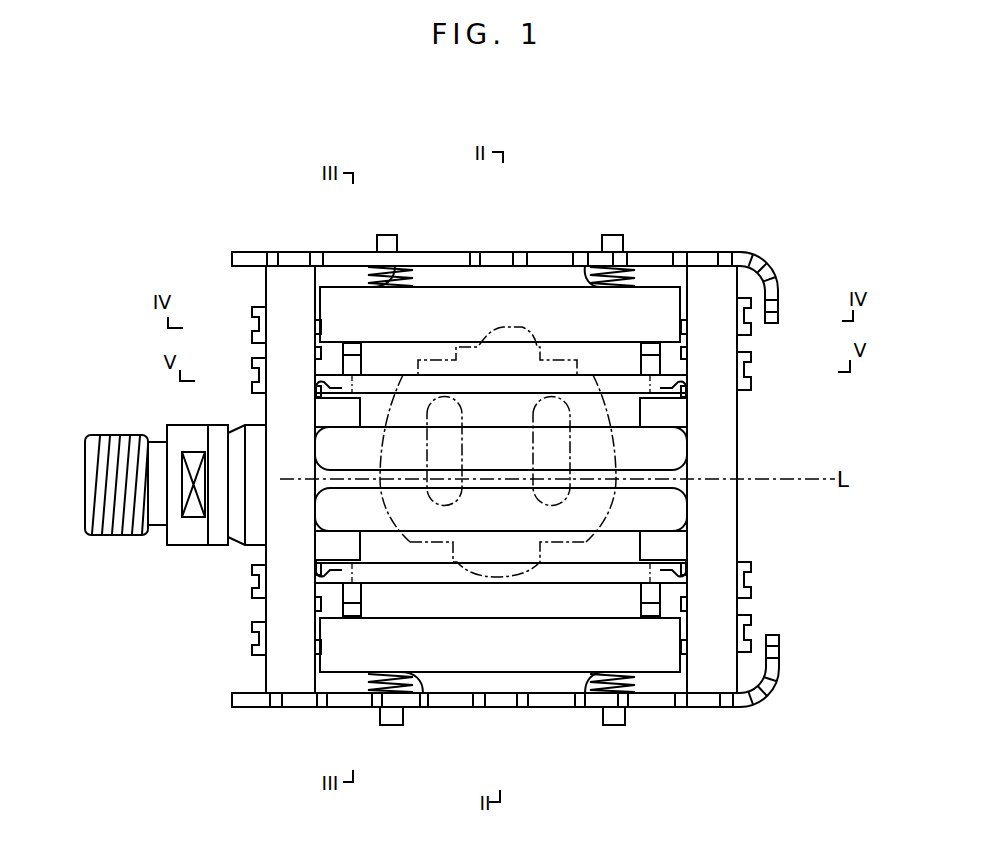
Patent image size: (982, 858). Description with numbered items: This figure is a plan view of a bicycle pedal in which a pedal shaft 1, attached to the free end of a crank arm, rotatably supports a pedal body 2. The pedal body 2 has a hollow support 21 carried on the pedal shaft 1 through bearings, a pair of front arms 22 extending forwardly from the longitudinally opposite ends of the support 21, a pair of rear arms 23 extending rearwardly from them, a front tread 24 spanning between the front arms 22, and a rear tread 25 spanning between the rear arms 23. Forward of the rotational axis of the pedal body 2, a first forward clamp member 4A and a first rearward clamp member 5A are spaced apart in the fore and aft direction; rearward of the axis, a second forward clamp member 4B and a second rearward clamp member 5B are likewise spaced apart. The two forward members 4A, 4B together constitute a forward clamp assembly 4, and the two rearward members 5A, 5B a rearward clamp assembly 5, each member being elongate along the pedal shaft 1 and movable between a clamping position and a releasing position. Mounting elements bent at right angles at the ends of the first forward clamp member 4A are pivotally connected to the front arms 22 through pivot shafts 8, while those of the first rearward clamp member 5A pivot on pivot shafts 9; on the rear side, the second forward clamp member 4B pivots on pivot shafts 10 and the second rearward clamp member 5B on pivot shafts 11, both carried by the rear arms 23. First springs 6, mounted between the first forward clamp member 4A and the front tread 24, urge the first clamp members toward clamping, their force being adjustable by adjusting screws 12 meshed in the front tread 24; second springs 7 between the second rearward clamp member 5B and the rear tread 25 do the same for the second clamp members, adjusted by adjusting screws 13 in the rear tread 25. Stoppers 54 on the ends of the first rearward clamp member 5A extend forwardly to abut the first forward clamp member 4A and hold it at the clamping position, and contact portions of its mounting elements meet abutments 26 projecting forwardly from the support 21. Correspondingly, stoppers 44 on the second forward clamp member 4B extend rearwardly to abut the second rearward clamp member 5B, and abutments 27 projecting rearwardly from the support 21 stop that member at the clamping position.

The pedal shaft 1 is at (177, 427).
The pedal body 2 is at (737, 468).
The forward clamp assembly 4 is at (500, 481).
The first forward clamp member 4A is at (455, 287).
The second forward clamp member 4B is at (465, 582).
The rearward clamp assembly 5 is at (501, 501).
The first rearward clamp member 5A is at (498, 375).
The second rearward clamp member 5B is at (507, 662).
The first springs 6 is at (405, 267).
The second springs 7 is at (418, 690).
The pivot shafts 8 is at (252, 310).
The pivot shafts 9 is at (252, 368).
The pivot shafts 10 is at (252, 597).
The pivot shafts 11 is at (252, 650).
The adjusting screws 12 is at (388, 235).
The adjusting screws 13 is at (382, 720).
The hollow support 21 is at (495, 437).
The front arms 22 is at (290, 252).
The rear arms 23 is at (278, 712).
The front tread 24 is at (665, 252).
The rear tread 25 is at (660, 708).
The abutments 26 is at (318, 390).
The abutments 27 is at (318, 572).
The stoppers 44 is at (335, 603).
The stoppers 54 is at (340, 353).